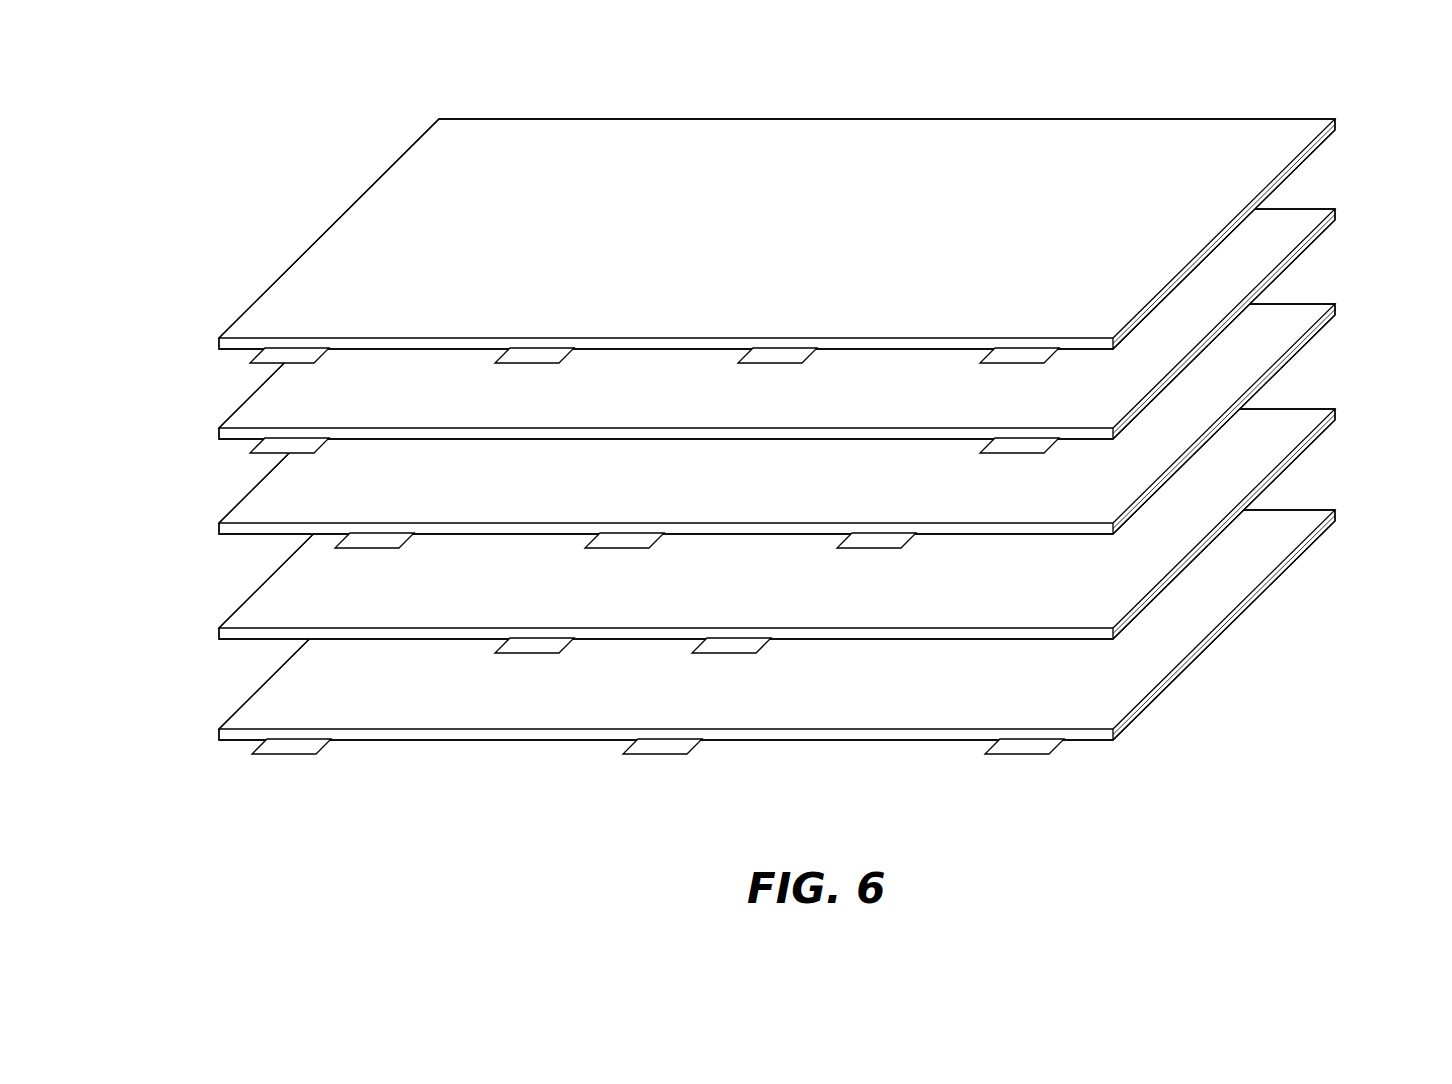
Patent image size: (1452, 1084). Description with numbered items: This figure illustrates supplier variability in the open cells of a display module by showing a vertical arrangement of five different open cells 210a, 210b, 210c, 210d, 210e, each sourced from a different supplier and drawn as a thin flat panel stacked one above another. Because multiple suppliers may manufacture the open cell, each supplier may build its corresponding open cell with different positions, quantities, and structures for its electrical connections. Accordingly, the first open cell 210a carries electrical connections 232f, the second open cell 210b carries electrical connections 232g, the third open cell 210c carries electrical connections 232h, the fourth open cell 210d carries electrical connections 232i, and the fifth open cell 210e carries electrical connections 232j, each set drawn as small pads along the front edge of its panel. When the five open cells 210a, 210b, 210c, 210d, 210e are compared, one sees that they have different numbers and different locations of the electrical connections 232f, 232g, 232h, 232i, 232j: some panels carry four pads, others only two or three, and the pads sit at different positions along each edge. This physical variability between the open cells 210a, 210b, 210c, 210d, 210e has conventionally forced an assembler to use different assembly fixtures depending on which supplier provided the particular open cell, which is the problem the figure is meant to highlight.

The open cell 210a is at (1338, 128).
The open cell 210b is at (1338, 218).
The open cell 210c is at (1338, 313).
The open cell 210d is at (1338, 418).
The open cell 210e is at (1338, 519).
The electrical connections 232f is at (203, 375).
The electrical connections 232g is at (203, 459).
The electrical connections 232h is at (203, 552).
The electrical connections 232i is at (203, 657).
The electrical connections 232j is at (203, 759).